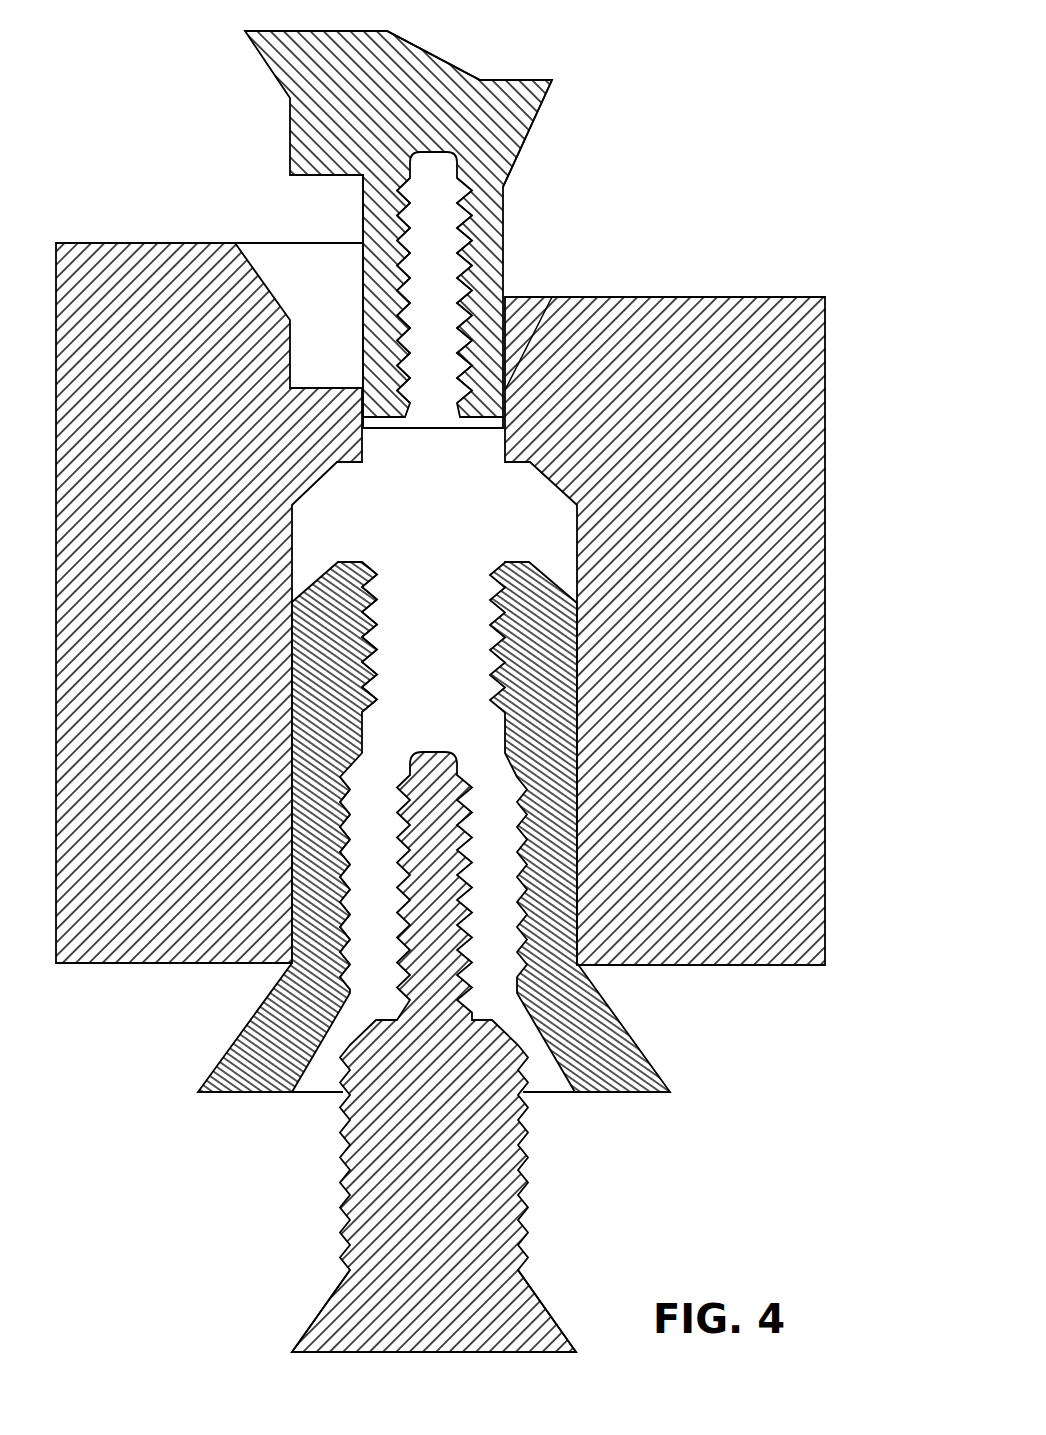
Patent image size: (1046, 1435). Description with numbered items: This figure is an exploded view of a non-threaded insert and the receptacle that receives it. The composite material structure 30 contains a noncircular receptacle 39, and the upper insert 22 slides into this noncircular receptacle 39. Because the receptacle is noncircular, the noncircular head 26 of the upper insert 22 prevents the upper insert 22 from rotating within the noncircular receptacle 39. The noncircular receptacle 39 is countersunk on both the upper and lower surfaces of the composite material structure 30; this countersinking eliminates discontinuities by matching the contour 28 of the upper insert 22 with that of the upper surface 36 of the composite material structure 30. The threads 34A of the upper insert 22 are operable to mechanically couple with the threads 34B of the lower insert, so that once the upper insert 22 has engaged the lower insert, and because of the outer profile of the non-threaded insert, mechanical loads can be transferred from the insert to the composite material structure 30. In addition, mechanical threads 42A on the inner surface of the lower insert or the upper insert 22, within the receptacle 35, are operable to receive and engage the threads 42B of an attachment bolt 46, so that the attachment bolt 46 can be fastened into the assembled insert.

The upper insert 22 is at (505, 217).
The noncircular head 26 is at (526, 136).
The contour 28 is at (453, 65).
The composite material structure 30 is at (826, 512).
The threads 34A is at (366, 320).
The threads 34B is at (375, 620).
The receptacle 35 is at (449, 260).
The upper surface 36 is at (707, 297).
The noncircular receptacle 39 is at (298, 246).
The mechanical threads 42A is at (410, 387).
The threads 42B is at (468, 873).
The attachment bolt 46 is at (548, 1312).